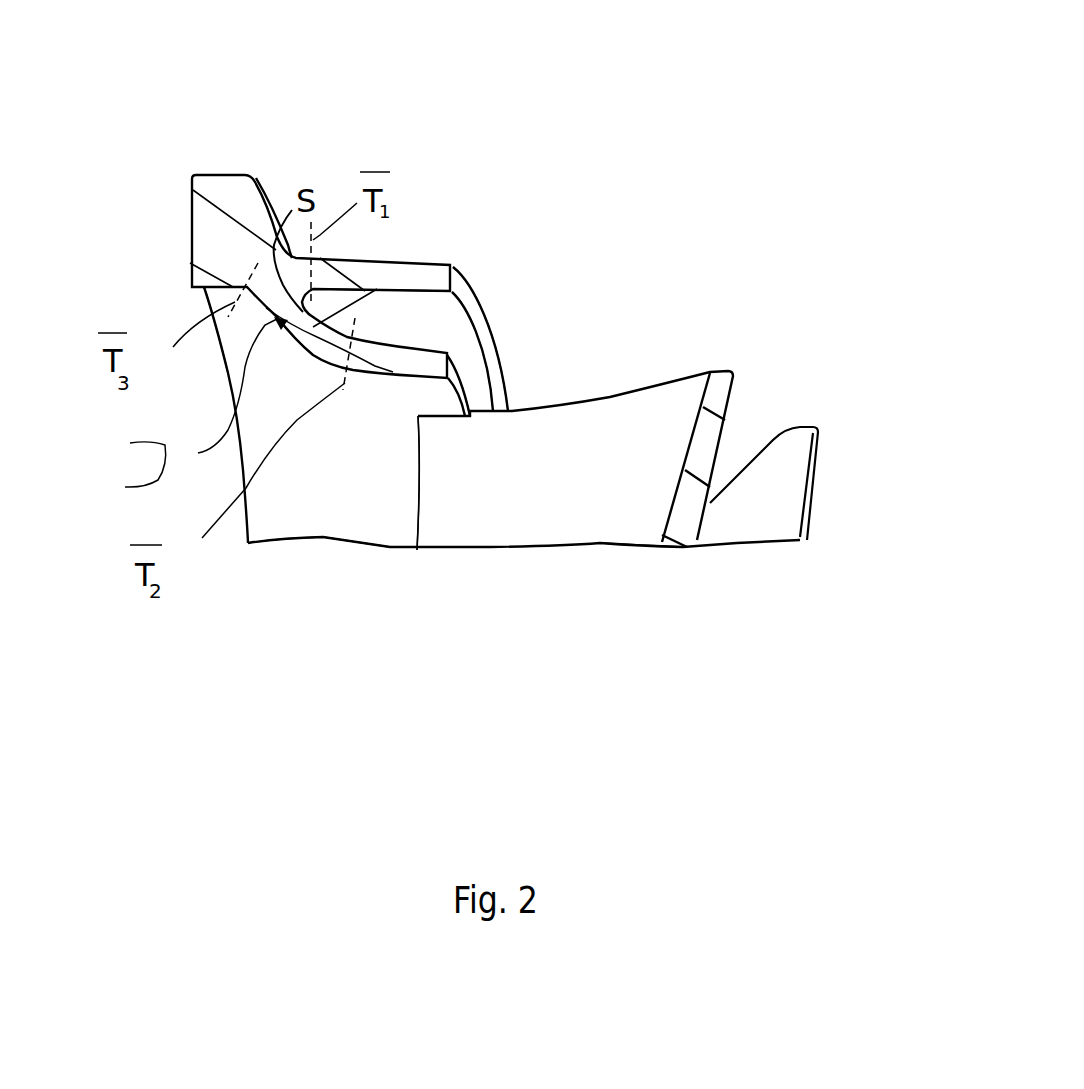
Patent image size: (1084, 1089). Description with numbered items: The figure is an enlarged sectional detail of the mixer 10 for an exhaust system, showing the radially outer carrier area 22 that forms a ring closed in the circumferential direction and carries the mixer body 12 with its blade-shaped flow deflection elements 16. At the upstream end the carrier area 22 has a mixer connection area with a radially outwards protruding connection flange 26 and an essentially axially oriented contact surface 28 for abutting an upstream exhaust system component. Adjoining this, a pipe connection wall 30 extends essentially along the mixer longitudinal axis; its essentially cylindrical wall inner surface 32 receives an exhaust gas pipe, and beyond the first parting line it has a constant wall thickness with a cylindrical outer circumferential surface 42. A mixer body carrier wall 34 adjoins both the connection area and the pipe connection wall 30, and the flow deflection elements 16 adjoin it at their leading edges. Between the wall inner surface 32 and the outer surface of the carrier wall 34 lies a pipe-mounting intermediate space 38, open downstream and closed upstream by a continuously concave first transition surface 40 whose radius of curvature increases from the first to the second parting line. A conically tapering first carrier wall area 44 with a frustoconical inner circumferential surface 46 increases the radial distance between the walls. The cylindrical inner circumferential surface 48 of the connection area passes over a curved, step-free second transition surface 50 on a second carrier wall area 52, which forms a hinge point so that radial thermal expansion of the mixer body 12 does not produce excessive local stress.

The mixer 10 is at (713, 150).
The mixer body 12 is at (840, 519).
The flow deflection elements 16 is at (620, 517).
The carrier area 22 is at (312, 160).
The connection flange 26 is at (227, 193).
The contact surface 28 is at (190, 228).
The pipe connection wall 30 is at (472, 292).
The wall inner surface 32 is at (442, 318).
The mixer body carrier wall 34 is at (357, 543).
The pipe-mounting intermediate space 38 is at (389, 322).
The first transition surface 40 is at (377, 289).
The outer circumferential surface 42 is at (433, 262).
The first carrier wall area 44 is at (432, 365).
The inner circumferential surface 46 is at (411, 397).
The inner circumferential surface 48 is at (203, 297).
The second transition surface 50 is at (265, 309).
The second carrier wall area 52 is at (310, 342).